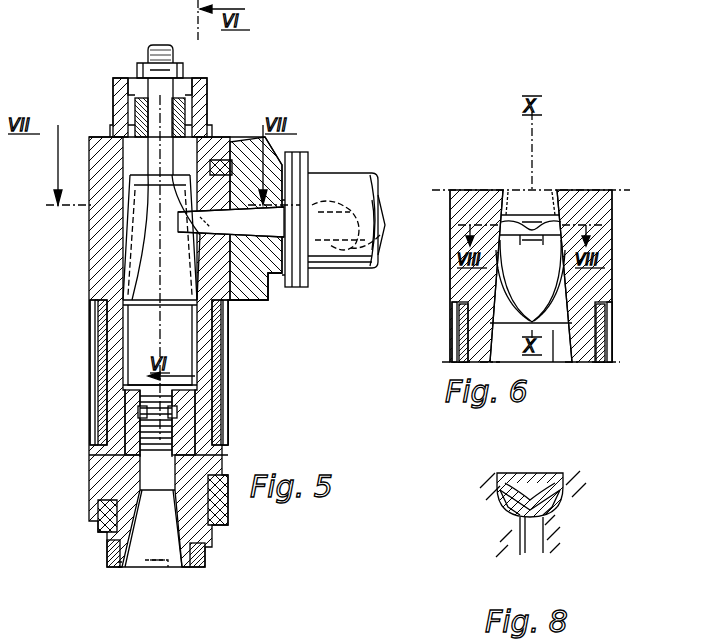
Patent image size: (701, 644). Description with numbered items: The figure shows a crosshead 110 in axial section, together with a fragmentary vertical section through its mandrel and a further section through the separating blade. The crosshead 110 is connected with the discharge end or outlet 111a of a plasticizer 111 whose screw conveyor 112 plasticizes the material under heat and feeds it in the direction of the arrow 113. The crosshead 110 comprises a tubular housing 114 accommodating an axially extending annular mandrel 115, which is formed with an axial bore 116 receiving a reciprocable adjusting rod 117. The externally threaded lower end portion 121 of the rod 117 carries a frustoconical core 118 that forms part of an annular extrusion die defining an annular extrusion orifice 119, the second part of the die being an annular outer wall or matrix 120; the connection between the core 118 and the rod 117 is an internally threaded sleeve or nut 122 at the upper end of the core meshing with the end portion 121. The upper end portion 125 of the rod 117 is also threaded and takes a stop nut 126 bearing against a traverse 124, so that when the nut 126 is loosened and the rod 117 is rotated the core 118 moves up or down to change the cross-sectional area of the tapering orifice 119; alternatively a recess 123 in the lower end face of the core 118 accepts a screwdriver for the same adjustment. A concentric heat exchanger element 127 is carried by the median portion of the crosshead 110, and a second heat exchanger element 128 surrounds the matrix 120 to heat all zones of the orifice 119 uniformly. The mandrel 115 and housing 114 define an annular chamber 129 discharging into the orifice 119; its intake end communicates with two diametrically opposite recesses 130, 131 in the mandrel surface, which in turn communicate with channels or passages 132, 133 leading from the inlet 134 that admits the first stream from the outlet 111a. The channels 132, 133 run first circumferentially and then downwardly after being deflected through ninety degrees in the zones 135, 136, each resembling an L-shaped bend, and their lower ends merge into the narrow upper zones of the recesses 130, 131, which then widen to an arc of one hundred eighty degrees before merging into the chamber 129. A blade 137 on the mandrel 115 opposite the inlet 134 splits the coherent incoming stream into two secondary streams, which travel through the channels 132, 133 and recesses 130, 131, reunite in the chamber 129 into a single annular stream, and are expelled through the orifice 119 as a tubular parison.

In FIG. 5, the crosshead 110 is at (74, 250).
In FIG. 5, the plasticizer 111 is at (354, 168).
In FIG. 5, the discharge end or outlet 111a is at (278, 285).
In FIG. 5, the screw conveyor 112 is at (345, 258).
In FIG. 6, the arrow 113 is at (398, 225).
In FIG. 5, the tubular housing 114 is at (97, 268).
In FIG. 6, the tubular housing 114 is at (458, 283).
In FIG. 8, the tubular housing 114 is at (572, 500).
In FIG. 5, the annular mandrel 115 is at (138, 343).
In FIG. 8, the annular mandrel 115 is at (500, 490).
In FIG. 5, the axial bore 116 is at (148, 382).
In FIG. 5, the adjusting rod 117 is at (190, 104).
In FIG. 8, the adjusting rod 117 is at (533, 478).
In FIG. 5, the core 118 is at (134, 568).
In FIG. 5, the annular extrusion orifice 119 is at (128, 566).
In FIG. 5, the annular outer wall or matrix 120 is at (106, 545).
In FIG. 5, the lower end portion 121 is at (215, 428).
In FIG. 5, the internally threaded sleeve or nut 122 is at (130, 442).
In FIG. 5, the recess 123 is at (158, 568).
In FIG. 5, the traverse 124 is at (186, 80).
In FIG. 5, the upper end portion 125 is at (146, 52).
In FIG. 5, the stop nut 126 is at (138, 68).
In FIG. 5, the heat exchanger element 127 is at (215, 360).
In FIG. 6, the heat exchanger element 127 is at (465, 352).
In FIG. 5, the second heat exchanger element 128 is at (206, 562).
In FIG. 5, the annular chamber 129 is at (218, 332).
In FIG. 6, the annular chamber 129 is at (555, 355).
In FIG. 5, the recess 130 is at (148, 304).
In FIG. 6, the recess 130 is at (505, 318).
In FIG. 6, the recess 131 is at (560, 300).
In FIG. 5, the channel or passage 132 is at (140, 195).
In FIG. 6, the channel or passage 132 is at (512, 214).
In FIG. 8, the channel or passage 132 is at (510, 507).
In FIG. 6, the channel or passage 133 is at (545, 218).
In FIG. 8, the channel or passage 133 is at (560, 500).
In FIG. 5, the inlet 134 is at (222, 200).
In FIG. 8, the inlet 134 is at (545, 540).
In FIG. 5, the zone of deflection 135 is at (130, 215).
In FIG. 5, the zone of deflection 136 is at (209, 602).
In FIG. 5, the blade 137 is at (198, 214).
In FIG. 6, the blade 137 is at (527, 220).
In FIG. 8, the blade 137 is at (527, 556).